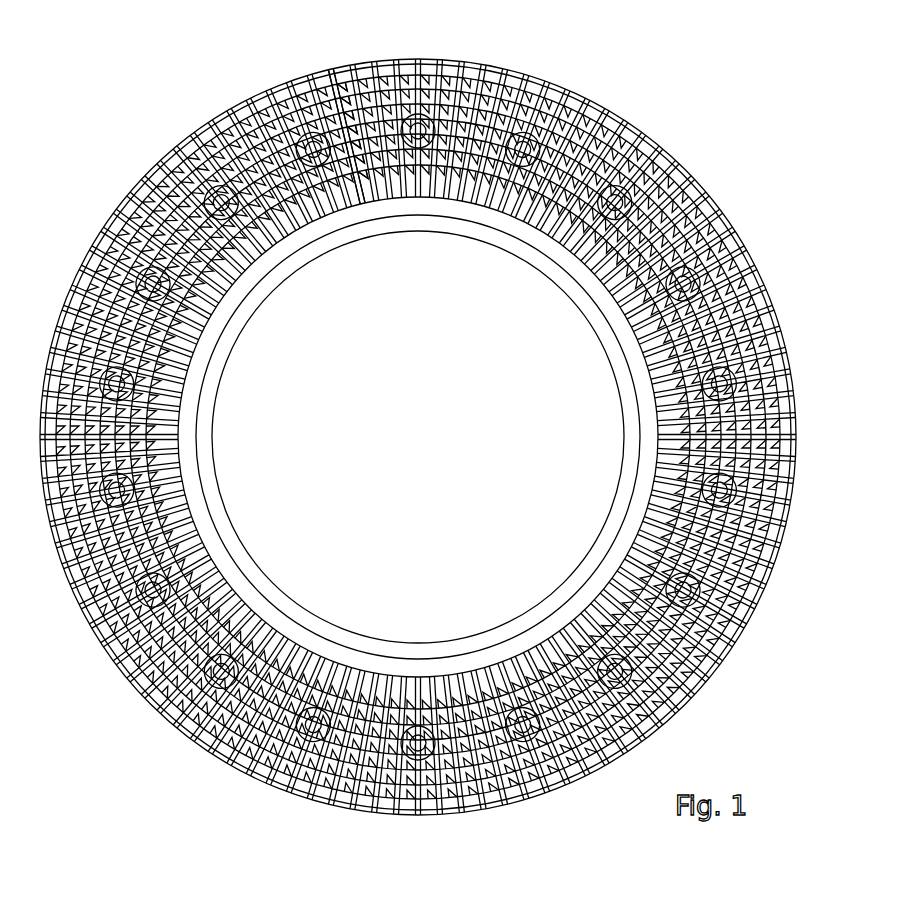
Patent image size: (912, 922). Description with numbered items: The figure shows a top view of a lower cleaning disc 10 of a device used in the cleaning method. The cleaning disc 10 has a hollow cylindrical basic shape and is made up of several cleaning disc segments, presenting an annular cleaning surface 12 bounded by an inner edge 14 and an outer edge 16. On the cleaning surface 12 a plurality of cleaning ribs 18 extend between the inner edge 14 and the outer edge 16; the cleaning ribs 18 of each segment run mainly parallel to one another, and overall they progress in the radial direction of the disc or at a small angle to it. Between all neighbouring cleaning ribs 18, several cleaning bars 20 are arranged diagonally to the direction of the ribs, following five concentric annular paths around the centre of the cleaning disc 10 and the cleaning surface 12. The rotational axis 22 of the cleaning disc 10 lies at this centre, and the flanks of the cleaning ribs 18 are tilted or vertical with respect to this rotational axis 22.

The cleaning disc 10 is at (710, 185).
The cleaning surface 12 is at (75, 280).
The inner edge 14 is at (365, 240).
The outer edge 16 is at (362, 72).
The cleaning ribs 18 is at (395, 72).
The cleaning bars 20 is at (330, 75).
The rotational axis 22 is at (420, 430).